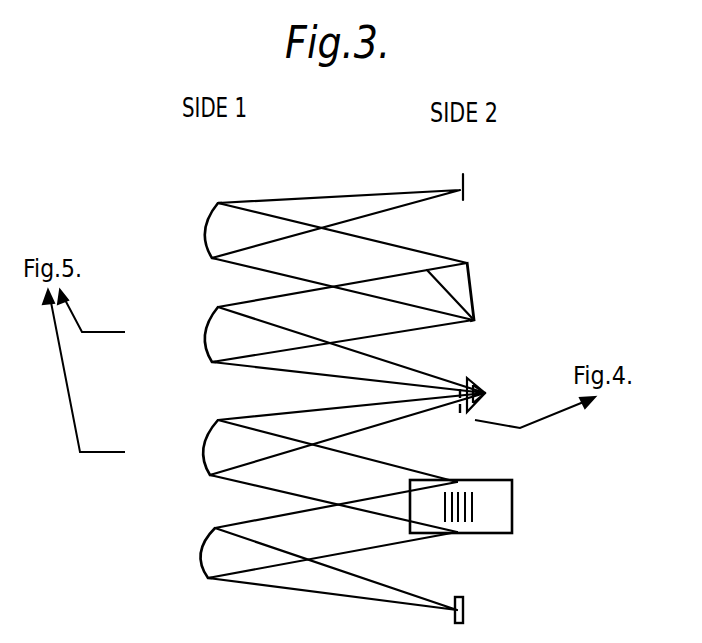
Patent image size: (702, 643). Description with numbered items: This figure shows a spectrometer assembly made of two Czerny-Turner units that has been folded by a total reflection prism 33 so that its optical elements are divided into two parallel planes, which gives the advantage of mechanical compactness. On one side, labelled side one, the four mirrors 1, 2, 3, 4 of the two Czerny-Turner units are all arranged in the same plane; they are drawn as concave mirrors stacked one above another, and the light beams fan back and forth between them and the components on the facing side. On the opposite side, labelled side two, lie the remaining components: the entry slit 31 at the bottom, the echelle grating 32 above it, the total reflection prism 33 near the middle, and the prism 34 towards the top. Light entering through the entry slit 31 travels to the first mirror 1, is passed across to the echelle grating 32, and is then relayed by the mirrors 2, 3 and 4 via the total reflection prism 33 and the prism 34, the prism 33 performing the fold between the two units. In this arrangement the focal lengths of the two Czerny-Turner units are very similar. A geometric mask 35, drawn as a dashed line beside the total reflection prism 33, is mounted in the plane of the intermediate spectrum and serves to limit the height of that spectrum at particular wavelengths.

The mirror 1 is at (179, 553).
The mirror 2 is at (180, 447).
The mirror 3 is at (180, 334).
The mirror 4 is at (182, 230).
The entry slit 31 is at (468, 613).
The echelle grating 32 is at (500, 515).
The total reflection prism 33 is at (480, 383).
The prism 34 is at (463, 297).
The geometric mask 35 is at (457, 415).